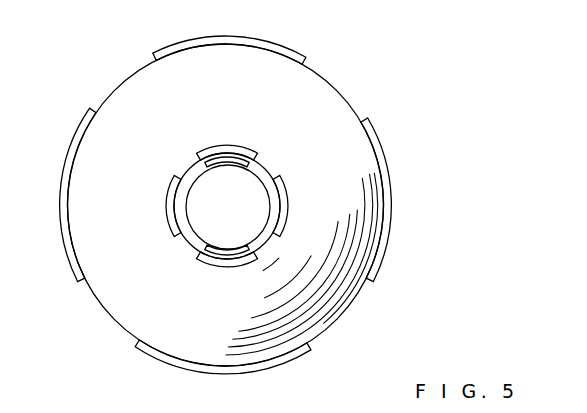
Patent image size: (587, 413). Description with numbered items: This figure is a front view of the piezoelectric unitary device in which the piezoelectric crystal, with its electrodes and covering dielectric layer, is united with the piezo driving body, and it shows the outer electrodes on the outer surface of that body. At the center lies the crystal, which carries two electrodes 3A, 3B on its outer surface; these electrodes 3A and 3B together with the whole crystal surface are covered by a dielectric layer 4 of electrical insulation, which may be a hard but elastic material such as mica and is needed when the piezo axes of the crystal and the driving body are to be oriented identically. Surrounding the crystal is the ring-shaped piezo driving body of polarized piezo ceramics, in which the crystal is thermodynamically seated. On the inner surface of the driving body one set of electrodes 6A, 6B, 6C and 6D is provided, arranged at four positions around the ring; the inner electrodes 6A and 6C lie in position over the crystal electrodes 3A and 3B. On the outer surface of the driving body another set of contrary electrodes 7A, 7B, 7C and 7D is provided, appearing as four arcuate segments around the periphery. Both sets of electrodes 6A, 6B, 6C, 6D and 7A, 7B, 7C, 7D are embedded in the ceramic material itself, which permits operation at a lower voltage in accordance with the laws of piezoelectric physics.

The electrode 3A is at (228, 167).
The electrode 3B is at (220, 243).
The dielectric layer 4 is at (259, 172).
The inner electrode 6A is at (227, 147).
The inner electrode 6B is at (286, 200).
The inner electrode 6C is at (220, 263).
The inner electrode 6D is at (170, 188).
The outer electrode 7A is at (279, 45).
The outer electrode 7B is at (378, 267).
The outer electrode 7C is at (258, 367).
The outer electrode 7D is at (67, 212).